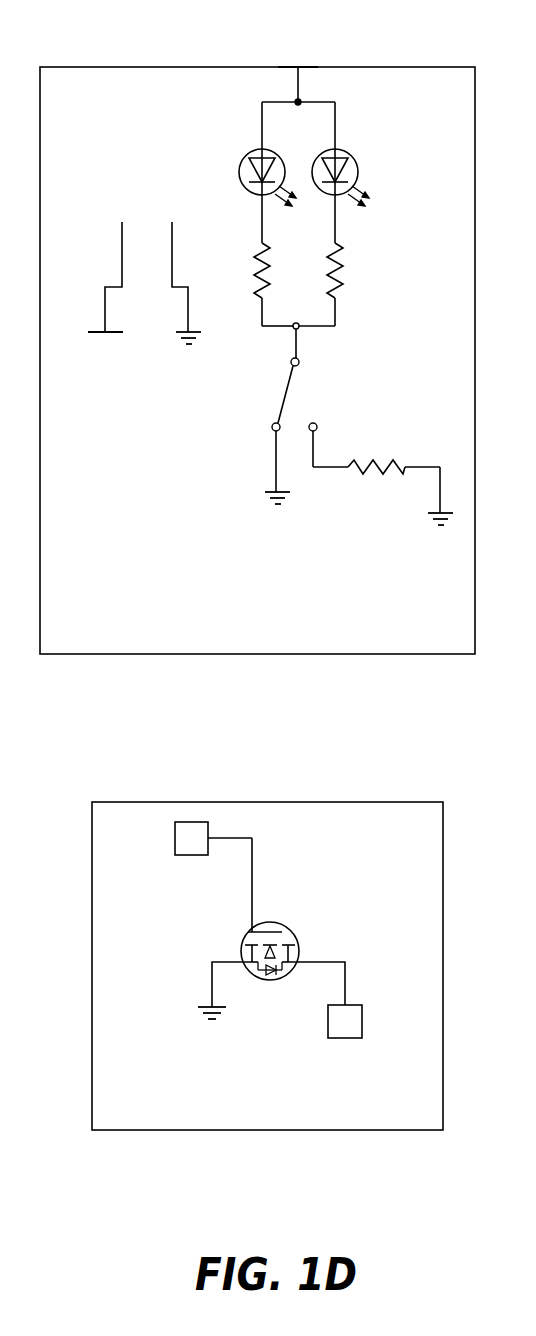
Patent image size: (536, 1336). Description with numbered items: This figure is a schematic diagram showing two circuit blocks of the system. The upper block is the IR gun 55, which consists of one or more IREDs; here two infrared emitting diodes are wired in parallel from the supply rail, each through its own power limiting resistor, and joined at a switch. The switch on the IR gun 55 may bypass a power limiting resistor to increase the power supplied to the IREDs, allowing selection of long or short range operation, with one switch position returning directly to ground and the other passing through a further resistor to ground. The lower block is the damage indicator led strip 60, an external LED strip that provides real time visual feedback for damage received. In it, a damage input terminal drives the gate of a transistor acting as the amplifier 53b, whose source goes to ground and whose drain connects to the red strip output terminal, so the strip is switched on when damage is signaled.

The IR gun 55 is at (257, 348).
The damage indicator led strip 60 is at (267, 966).
The amplifier 53b is at (284, 946).